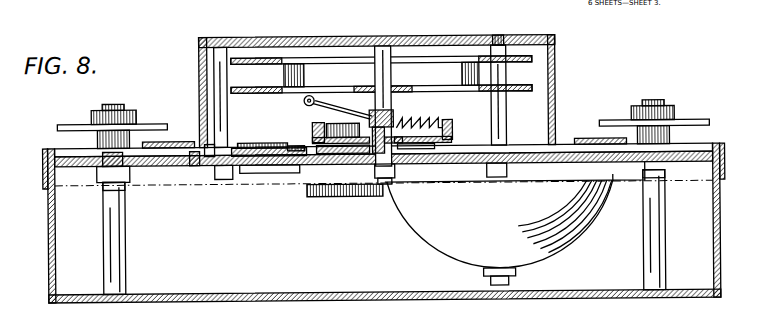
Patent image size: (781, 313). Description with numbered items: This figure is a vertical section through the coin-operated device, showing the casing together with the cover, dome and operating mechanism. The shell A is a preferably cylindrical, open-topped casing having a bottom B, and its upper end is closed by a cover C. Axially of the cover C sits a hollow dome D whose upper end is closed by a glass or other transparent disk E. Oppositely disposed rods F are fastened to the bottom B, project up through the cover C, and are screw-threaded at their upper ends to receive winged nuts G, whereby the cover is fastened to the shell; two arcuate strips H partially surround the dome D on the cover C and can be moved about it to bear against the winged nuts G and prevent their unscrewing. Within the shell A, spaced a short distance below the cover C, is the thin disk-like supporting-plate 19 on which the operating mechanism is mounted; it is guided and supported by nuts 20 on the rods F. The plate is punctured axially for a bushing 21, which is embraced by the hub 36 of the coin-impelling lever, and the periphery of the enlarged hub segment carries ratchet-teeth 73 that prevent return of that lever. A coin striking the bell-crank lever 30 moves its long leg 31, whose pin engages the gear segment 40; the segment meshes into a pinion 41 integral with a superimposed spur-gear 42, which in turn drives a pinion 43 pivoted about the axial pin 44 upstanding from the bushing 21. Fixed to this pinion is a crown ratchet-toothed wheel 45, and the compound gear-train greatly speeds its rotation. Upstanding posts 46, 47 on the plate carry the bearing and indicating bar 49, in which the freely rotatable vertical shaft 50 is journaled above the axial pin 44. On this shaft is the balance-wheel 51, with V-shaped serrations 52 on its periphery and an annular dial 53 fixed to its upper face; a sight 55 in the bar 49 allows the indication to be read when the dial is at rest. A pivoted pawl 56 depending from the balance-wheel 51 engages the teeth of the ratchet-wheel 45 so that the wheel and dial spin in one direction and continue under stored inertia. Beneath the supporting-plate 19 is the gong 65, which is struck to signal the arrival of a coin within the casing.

The supporting-plate 19 is at (262, 173).
The nuts 20 is at (104, 186).
The bushing 21 is at (378, 166).
The bell-crank lever 30 is at (101, 168).
The long leg 31 is at (194, 165).
The hub 36 is at (345, 166).
The gear segment 40 is at (211, 147).
The pinion 41 is at (292, 165).
The spur-gear 42 is at (258, 145).
The pinion 43 is at (410, 147).
The pin 44 is at (404, 127).
The crown ratchet-toothed wheel 45 is at (452, 130).
The post 46 is at (229, 103).
The post 47 is at (509, 100).
The bearing and indicating bar 49 is at (420, 36).
The vertical shaft 50 is at (384, 56).
The balance-wheel 51 is at (362, 86).
The V-shaped serrations 52 is at (248, 86).
The annular dial 53 is at (330, 56).
The sight 55 is at (499, 45).
The pawl 56 is at (362, 121).
The gong 65 is at (440, 242).
The ratchet-teeth 73 is at (484, 156).
The shell A is at (46, 270).
The bottom B is at (312, 292).
The cover C is at (56, 148).
The dome D is at (199, 75).
The transparent disk E is at (558, 42).
The rods F is at (127, 241).
The winged nuts G is at (78, 124).
The arcuate strips H is at (173, 139).